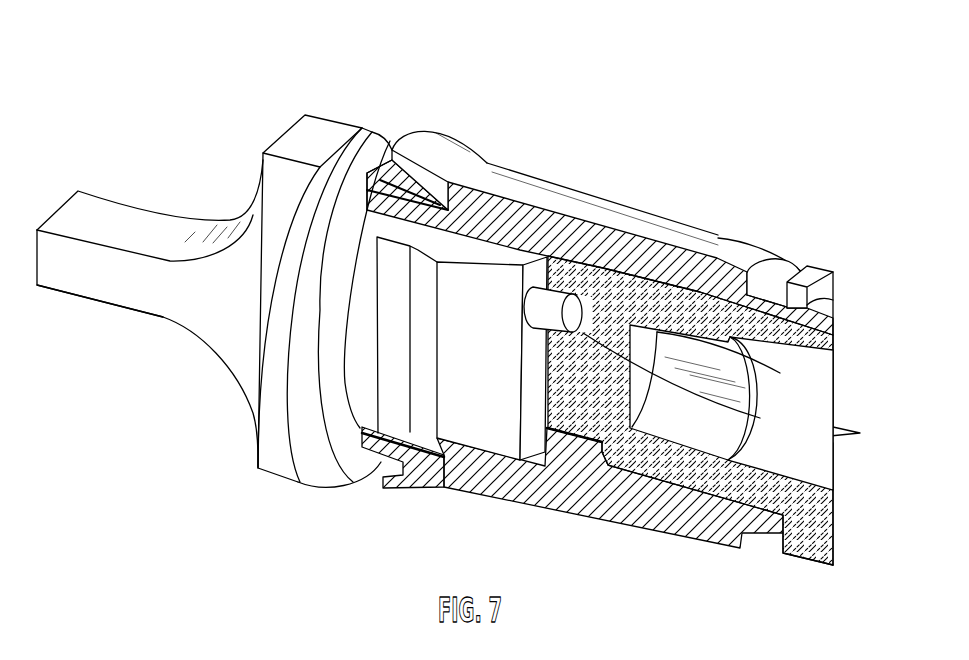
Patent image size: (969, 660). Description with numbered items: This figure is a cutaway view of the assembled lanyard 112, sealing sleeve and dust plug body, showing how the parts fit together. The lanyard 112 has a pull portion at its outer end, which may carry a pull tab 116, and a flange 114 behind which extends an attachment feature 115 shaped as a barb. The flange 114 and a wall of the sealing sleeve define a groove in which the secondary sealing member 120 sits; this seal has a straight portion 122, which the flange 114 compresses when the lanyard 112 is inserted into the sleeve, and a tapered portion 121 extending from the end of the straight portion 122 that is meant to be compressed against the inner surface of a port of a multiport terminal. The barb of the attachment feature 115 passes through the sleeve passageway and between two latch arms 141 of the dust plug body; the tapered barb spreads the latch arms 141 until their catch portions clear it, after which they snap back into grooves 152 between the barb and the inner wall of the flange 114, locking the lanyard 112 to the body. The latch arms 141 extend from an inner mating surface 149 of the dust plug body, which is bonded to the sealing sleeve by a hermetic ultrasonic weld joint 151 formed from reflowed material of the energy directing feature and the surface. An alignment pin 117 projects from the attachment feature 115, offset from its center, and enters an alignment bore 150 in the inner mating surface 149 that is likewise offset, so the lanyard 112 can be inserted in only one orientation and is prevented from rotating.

The lanyard 112 is at (138, 142).
The flange 114 is at (297, 480).
The attachment feature 115 is at (475, 414).
The pull tab 116 is at (266, 152).
The alignment pin 117 is at (556, 294).
The secondary sealing member 120 is at (611, 296).
The tapered portion 121 is at (446, 140).
The straight portion 122 is at (380, 175).
The latch arms 141 is at (558, 500).
The inner mating surface 149 is at (690, 415).
The alignment bore 150 is at (760, 420).
The hermetic ultrasonic weld joint 151 is at (764, 376).
The grooves 152 is at (395, 394).